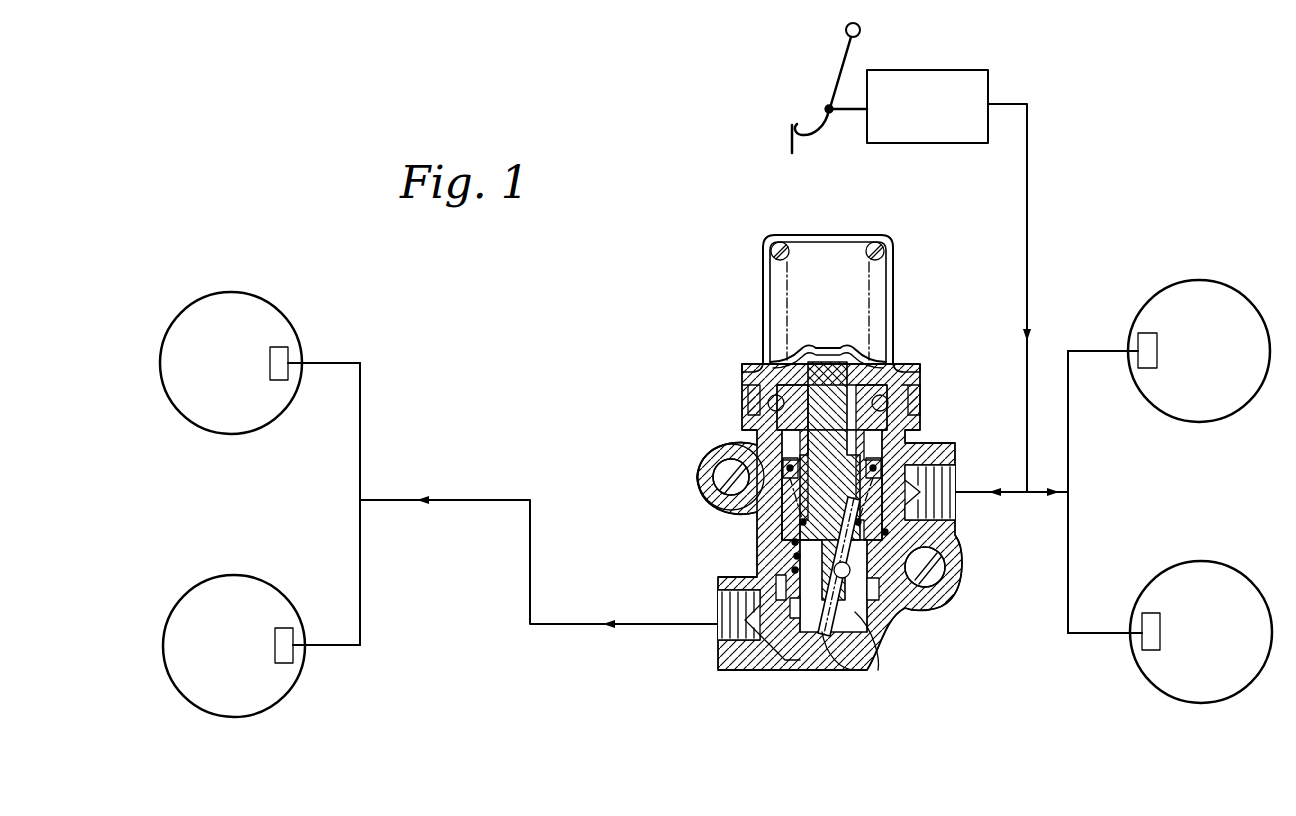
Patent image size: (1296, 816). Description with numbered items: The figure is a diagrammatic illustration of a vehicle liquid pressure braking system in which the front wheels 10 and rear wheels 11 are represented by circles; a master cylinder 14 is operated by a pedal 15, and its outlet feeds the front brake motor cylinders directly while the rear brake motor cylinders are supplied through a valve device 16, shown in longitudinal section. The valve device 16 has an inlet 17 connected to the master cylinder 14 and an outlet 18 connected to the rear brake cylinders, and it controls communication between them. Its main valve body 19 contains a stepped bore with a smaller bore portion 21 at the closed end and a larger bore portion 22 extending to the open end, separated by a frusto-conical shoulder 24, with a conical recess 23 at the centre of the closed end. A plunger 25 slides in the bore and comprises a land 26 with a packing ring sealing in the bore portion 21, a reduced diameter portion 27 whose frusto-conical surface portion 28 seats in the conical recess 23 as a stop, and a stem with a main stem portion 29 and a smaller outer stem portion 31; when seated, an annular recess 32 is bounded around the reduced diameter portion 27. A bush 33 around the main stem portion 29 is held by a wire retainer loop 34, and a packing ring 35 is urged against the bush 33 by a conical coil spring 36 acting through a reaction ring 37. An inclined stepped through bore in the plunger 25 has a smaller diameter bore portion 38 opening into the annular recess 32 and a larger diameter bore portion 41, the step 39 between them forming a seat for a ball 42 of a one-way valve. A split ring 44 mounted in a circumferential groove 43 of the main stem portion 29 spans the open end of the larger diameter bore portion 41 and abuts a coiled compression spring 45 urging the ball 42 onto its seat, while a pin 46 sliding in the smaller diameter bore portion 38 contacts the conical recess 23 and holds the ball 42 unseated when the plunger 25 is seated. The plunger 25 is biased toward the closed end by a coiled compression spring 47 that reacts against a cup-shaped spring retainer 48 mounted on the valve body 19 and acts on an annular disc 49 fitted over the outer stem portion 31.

The front wheels 10 is at (1200, 422).
The rear wheels 11 is at (233, 434).
The master cylinder 14 is at (905, 72).
The pedal 15 is at (788, 124).
The valve device 16 is at (685, 468).
The inlet 17 is at (948, 490).
The outlet 18 is at (732, 632).
The main valve body 19 is at (703, 505).
The bore portion 21 is at (935, 594).
The second bore portion 22 is at (905, 456).
The conical recess 23 is at (845, 671).
The frusto-conical shoulder 24 is at (795, 571).
The plunger 25 is at (790, 607).
The land 26 is at (885, 638).
The reduced diameter portion 27 is at (880, 655).
The frusto-conical surface portion 28 is at (862, 671).
The main stem portion 29 is at (893, 405).
The outer stem portion 31 is at (838, 375).
The annular recess 32 is at (762, 672).
The bush 33 is at (790, 424).
The wire retainer loop 34 is at (780, 405).
The packing ring 35 is at (782, 457).
The conical coil spring 36 is at (787, 518).
The reaction ring 37 is at (712, 484).
The smaller diameter bore portion 38 is at (722, 660).
The step 39 is at (945, 618).
The larger diameter bore portion 41 is at (776, 583).
The ball 42 is at (912, 578).
The circumferential groove 43 is at (797, 557).
The split ring 44 is at (795, 543).
The coiled compression spring 45 is at (886, 534).
The pin 46 is at (818, 672).
The coiled compression spring 47 is at (878, 290).
The spring retainer 48 is at (763, 318).
The annular disc 49 is at (812, 358).